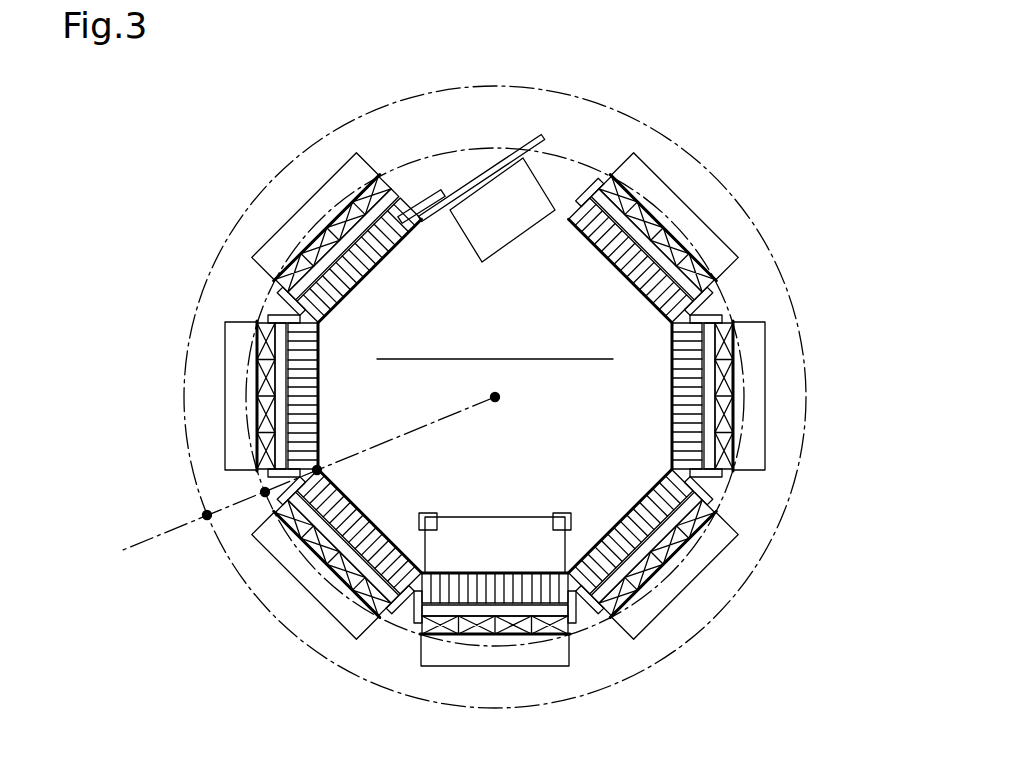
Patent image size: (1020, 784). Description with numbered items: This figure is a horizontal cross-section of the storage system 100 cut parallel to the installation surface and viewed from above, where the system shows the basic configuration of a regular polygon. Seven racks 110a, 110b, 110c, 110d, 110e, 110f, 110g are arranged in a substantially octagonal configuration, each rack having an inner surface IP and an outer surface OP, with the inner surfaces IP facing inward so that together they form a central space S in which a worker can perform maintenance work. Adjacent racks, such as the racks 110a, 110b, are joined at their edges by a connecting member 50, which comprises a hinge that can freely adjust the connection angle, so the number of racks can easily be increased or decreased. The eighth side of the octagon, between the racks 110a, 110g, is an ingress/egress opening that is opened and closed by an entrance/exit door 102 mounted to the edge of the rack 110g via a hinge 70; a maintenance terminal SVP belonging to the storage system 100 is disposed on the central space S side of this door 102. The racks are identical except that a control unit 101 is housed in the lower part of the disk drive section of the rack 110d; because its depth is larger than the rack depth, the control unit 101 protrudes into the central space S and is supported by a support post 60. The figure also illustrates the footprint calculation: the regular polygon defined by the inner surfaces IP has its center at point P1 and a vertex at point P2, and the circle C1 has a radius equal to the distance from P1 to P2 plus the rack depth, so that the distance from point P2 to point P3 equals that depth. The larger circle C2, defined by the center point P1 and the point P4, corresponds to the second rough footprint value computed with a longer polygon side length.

The storage system 100 is at (418, 57).
The control unit 101 is at (473, 528).
The entrance/exit door 102 is at (500, 163).
The rack 110a is at (676, 177).
The rack 110b is at (779, 352).
The rack 110c is at (684, 606).
The rack 110d is at (459, 675).
The rack 110e is at (308, 606).
The rack 110f is at (212, 438).
The rack 110g is at (333, 167).
The connecting member 50 is at (416, 620).
The support post 60 is at (435, 513).
The hinge 70 is at (418, 213).
The inner surface IP is at (470, 580).
The outer surface OP is at (498, 636).
The maintenance terminal SVP is at (466, 232).
The circle C1 is at (575, 157).
The circle C2 is at (638, 120).
The center P1 is at (495, 397).
The vertex point P2 is at (318, 469).
The point P3 is at (262, 492).
The point P4 is at (207, 515).
The central space S is at (495, 347).